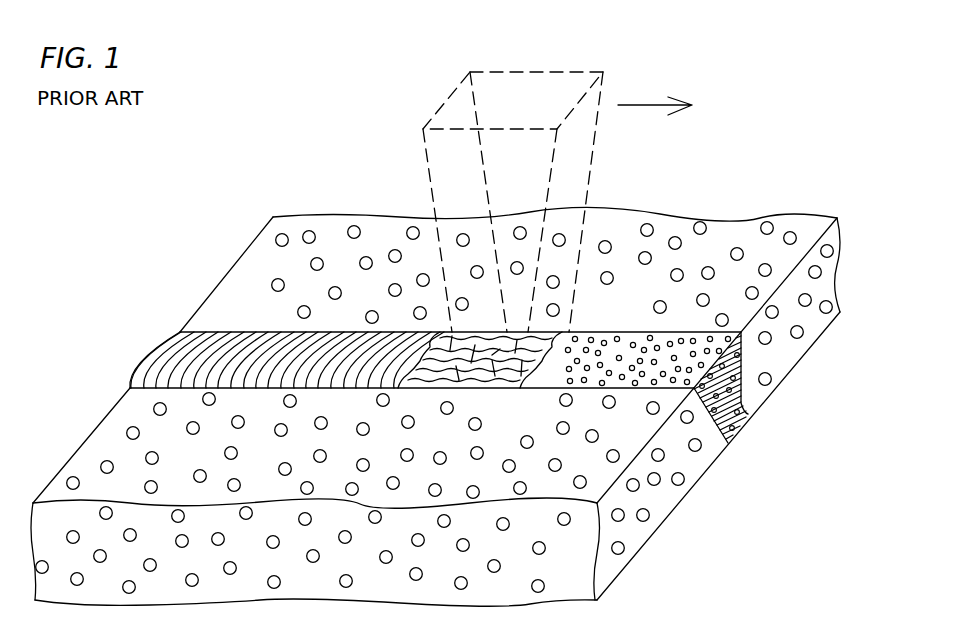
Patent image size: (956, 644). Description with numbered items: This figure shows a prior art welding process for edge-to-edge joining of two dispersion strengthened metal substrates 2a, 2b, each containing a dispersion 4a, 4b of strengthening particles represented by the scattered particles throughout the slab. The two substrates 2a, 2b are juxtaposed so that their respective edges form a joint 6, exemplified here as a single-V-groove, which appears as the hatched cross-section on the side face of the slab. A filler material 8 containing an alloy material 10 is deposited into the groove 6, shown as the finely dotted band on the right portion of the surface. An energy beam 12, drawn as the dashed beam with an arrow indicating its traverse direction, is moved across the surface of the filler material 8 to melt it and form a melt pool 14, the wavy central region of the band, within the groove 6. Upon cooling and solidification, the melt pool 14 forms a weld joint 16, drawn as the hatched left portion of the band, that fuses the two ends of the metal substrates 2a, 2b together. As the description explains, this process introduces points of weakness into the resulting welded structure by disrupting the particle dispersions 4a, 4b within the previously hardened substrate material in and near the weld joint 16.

The dispersion strengthened metal substrate 2a is at (662, 498).
The dispersion strengthened metal substrate 2b is at (783, 353).
The dispersion 4a is at (697, 452).
The dispersion 4b is at (807, 307).
The joint 6 is at (746, 414).
The filler material 8 is at (680, 339).
The alloy material 10 is at (621, 347).
The energy beam 12 is at (527, 72).
The melt pool 14 is at (489, 372).
The weld joint 16 is at (172, 355).